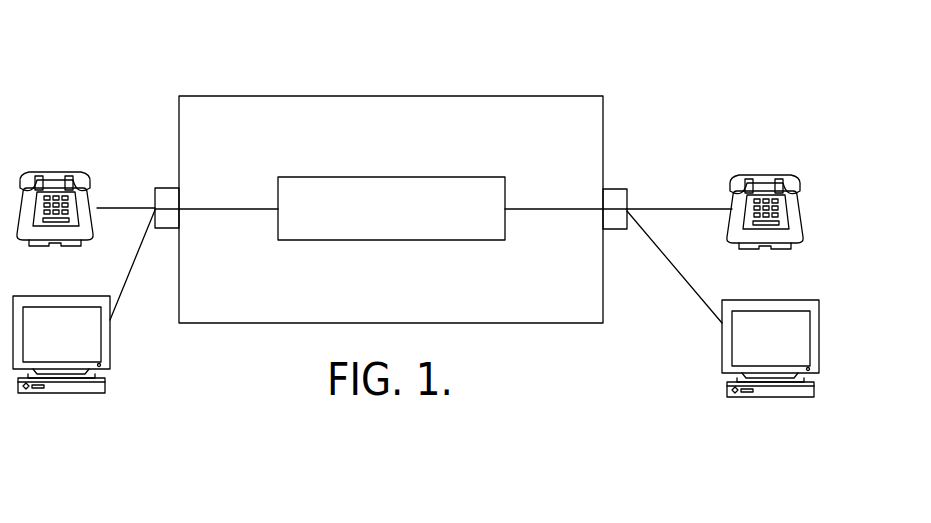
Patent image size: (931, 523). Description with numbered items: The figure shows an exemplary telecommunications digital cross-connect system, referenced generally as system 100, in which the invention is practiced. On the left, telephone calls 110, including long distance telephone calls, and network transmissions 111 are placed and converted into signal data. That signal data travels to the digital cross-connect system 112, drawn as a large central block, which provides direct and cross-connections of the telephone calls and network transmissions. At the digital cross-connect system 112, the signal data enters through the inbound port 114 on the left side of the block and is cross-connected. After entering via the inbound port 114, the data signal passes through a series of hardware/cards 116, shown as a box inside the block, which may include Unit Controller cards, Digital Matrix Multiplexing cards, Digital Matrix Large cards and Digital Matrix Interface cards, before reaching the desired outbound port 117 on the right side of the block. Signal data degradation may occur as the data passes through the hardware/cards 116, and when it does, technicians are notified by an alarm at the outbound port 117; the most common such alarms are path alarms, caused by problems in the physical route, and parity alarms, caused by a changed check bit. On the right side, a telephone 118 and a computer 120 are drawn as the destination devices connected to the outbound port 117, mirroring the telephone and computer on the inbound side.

The digital cross-connect system 100 is at (148, 46).
The telephone calls 110 is at (53, 170).
The network transmissions 111 is at (57, 393).
The digital cross-connect system (DCS) 112 is at (348, 96).
The inbound port 114 is at (155, 192).
The hardware/cards 116 is at (343, 177).
The outbound port 117 is at (627, 200).
The telephone 118 is at (770, 173).
The computer 120 is at (770, 394).